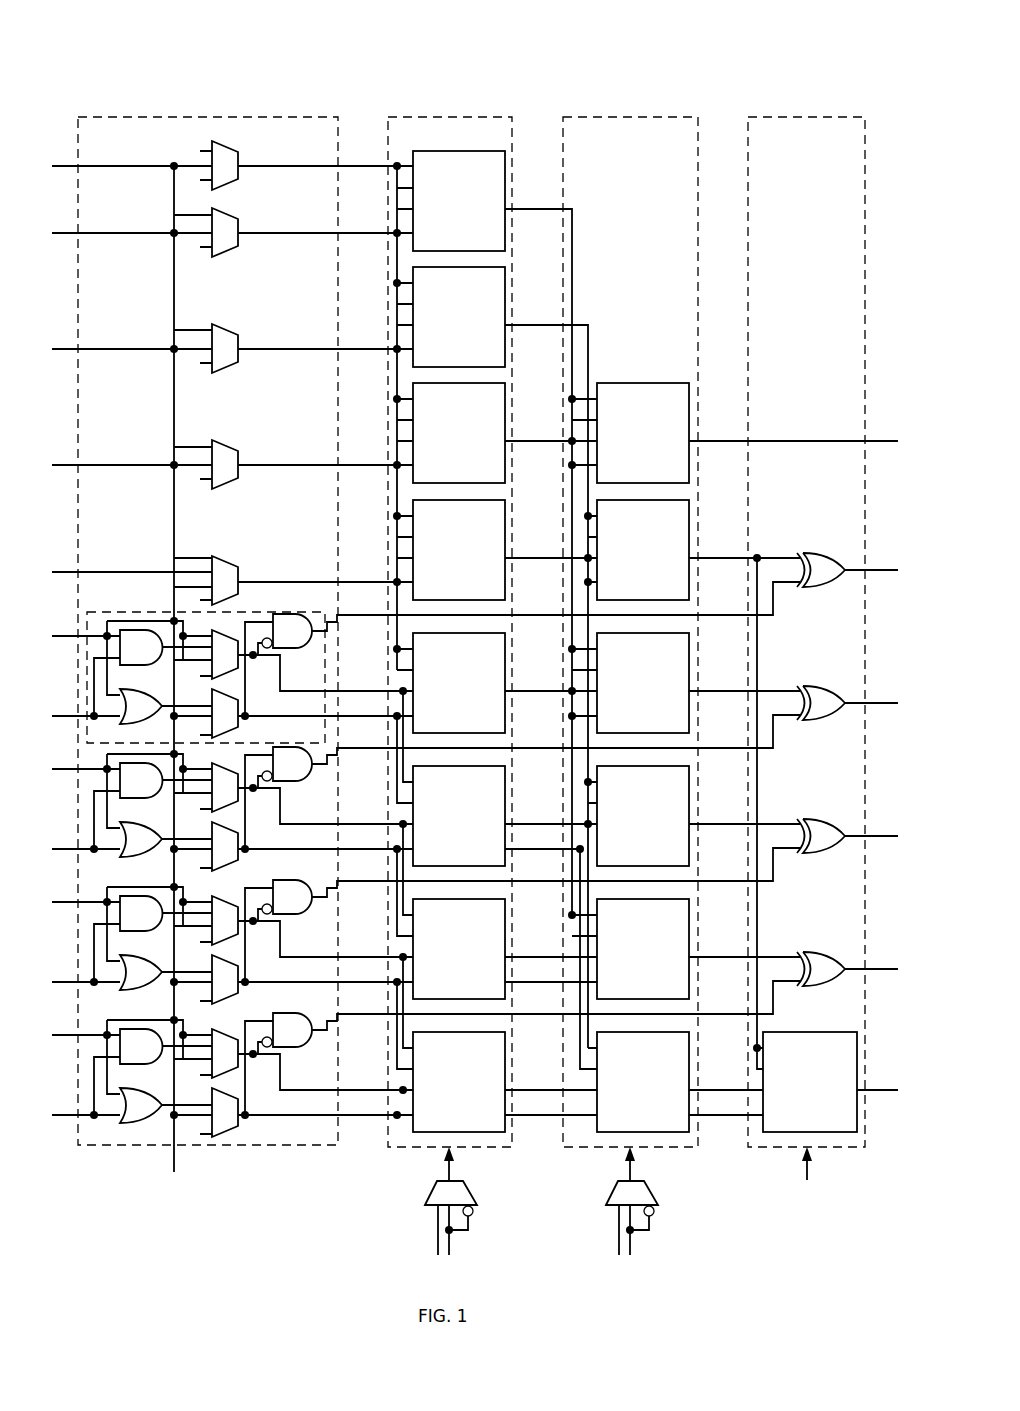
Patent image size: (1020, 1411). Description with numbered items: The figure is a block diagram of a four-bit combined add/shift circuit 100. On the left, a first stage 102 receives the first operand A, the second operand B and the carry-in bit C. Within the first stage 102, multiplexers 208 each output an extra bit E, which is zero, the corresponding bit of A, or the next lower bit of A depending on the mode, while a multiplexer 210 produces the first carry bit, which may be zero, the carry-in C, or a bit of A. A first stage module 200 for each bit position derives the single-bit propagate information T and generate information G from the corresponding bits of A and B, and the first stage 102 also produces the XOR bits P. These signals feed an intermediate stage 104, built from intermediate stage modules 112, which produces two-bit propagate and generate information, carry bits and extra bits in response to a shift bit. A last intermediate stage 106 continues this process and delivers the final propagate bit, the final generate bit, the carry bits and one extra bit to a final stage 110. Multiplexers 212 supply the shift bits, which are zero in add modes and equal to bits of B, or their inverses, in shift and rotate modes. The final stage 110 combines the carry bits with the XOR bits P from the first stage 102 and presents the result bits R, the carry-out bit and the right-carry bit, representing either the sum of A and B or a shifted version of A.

The add/shift circuit 100 is at (711, 63).
The first stage 102 is at (208, 117).
The intermediate stage 104 is at (473, 115).
The last intermediate stage 106 is at (630, 117).
The final stage 110 is at (805, 117).
The intermediate stage module 112 is at (458, 149).
The first stage module 200 is at (257, 608).
The multiplexer 208 is at (225, 140).
The multiplexer 210 is at (225, 556).
The multiplexer 212 is at (470, 1193).